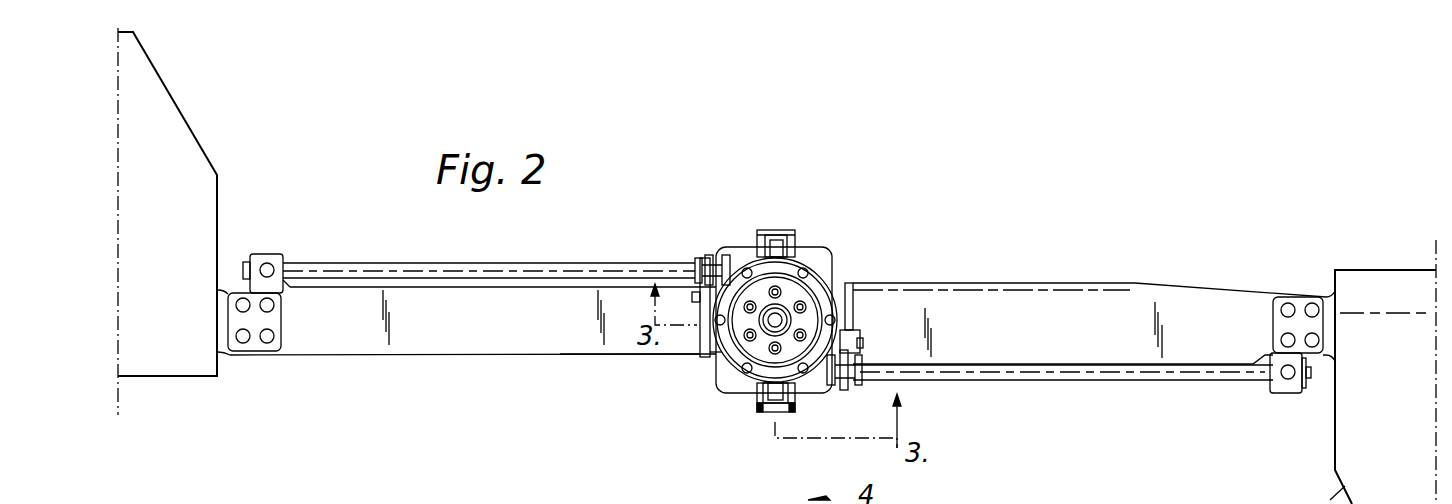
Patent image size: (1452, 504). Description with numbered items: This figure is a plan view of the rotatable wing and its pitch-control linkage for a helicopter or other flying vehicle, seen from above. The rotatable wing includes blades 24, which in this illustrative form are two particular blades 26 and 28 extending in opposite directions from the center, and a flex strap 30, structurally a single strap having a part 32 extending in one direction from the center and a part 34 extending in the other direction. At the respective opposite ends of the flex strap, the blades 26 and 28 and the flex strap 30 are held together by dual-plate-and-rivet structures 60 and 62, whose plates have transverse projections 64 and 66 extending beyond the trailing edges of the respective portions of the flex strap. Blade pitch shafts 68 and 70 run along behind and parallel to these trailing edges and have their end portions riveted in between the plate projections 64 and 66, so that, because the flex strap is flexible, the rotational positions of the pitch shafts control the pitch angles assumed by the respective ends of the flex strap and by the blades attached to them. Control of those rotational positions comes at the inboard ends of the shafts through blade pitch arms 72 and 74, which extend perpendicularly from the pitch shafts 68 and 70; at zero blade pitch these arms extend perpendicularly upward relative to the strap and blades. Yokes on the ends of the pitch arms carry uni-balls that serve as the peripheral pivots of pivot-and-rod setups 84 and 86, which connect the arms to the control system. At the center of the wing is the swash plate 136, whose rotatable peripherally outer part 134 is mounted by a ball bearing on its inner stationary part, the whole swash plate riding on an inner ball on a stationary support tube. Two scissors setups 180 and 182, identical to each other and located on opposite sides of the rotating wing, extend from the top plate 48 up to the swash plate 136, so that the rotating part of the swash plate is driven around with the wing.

The blades 24 is at (188, 134).
The blade 26 is at (183, 376).
The blade 28 is at (1372, 270).
The flex strap 30 is at (518, 357).
The flex strap part 32 is at (978, 283).
The flex strap part 34 is at (593, 355).
The top plate 48 is at (727, 247).
The dual-plate-and-rivet structure 60 is at (263, 352).
The dual-plate-and-rivet structure 62 is at (1296, 297).
The transverse projection 64 is at (272, 254).
The transverse projection 66 is at (1287, 393).
The blade pitch shaft 68 is at (487, 257).
The blade pitch shaft 70 is at (1082, 381).
The blade pitch arm 72 is at (697, 258).
The blade pitch arm 74 is at (863, 384).
The pivot-and-rod setup 84 is at (697, 322).
The pivot-and-rod setup 86 is at (858, 320).
The rotatable peripherally outer part of swash plate 134 is at (730, 360).
The swash plate 136 is at (822, 284).
The scissors setup 180 is at (768, 413).
The scissors setup 182 is at (800, 213).